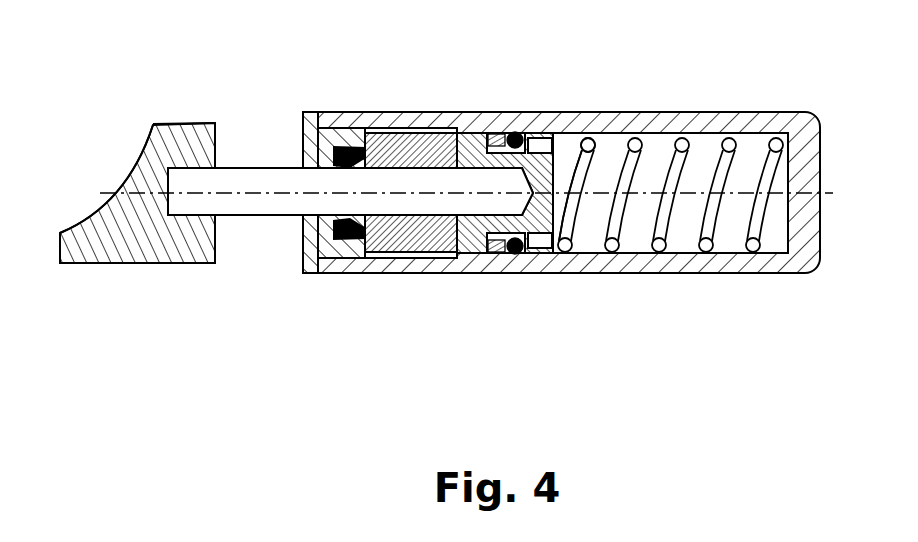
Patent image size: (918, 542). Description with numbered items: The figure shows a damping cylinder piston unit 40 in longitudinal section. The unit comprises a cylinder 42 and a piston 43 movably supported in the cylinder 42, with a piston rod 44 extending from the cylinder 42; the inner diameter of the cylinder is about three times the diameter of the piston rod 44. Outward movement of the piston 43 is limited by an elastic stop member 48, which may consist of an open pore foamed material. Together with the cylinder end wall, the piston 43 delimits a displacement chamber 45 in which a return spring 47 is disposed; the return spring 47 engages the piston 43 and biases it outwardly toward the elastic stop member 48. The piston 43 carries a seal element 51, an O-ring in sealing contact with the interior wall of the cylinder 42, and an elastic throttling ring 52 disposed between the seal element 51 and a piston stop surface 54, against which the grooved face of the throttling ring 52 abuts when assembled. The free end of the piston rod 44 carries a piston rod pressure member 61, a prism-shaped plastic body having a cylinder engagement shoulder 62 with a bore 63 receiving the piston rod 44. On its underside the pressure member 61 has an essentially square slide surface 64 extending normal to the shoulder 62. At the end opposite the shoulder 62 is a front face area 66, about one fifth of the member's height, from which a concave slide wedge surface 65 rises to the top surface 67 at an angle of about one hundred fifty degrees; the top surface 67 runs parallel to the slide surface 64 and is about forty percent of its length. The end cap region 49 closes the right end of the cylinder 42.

The cylinder piston unit 40 is at (414, 286).
The cylinder 42 is at (563, 264).
The piston 43 is at (477, 235).
The piston rod 44 is at (247, 204).
The displacement chamber 45 is at (644, 213).
The return spring 47 is at (581, 163).
The elastic stop member 48 is at (400, 148).
The end cap of cylinder 49 is at (800, 145).
The seal element 51 is at (519, 133).
The elastic throttling ring 52 is at (508, 133).
The piston stop surface 54 is at (494, 134).
The piston rod pressure member 61 is at (175, 235).
The cylinder engagement shoulder 62 is at (215, 147).
The bore 63 is at (196, 216).
The slide surface 64 is at (130, 263).
The concave slide wedge surface 65 is at (106, 118).
The front face area 66 is at (43, 327).
The top surface 67 is at (173, 123).